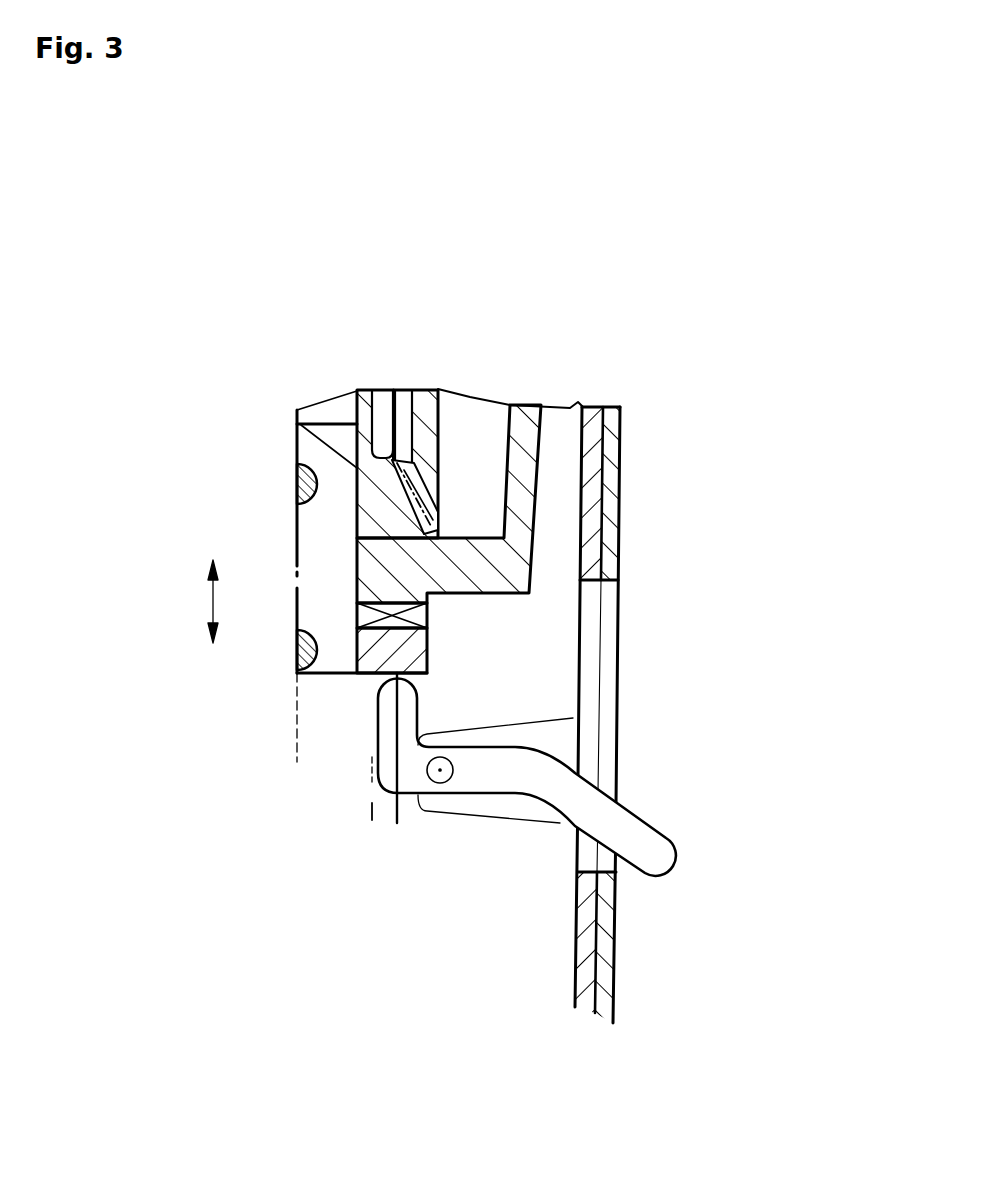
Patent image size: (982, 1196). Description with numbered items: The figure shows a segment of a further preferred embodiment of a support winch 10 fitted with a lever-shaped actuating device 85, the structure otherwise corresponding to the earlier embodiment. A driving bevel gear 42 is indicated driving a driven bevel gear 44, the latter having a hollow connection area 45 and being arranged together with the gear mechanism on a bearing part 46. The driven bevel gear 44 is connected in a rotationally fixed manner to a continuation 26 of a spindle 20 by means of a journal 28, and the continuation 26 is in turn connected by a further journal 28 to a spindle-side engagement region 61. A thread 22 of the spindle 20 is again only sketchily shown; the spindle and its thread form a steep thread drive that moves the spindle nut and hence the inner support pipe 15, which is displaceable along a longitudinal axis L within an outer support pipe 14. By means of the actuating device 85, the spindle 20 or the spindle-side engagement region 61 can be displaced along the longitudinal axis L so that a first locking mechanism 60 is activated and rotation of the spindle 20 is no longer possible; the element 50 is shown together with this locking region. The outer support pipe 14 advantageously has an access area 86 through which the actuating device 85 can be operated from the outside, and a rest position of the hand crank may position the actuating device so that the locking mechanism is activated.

The support winch 10 is at (640, 308).
The outer support pipe 14 is at (622, 513).
The inner support pipe 15 is at (622, 422).
The spindle 20 is at (333, 713).
The thread 22 is at (362, 817).
The continuation 26 is at (313, 563).
The journal 28 is at (297, 472).
The driving bevel gear 42 is at (428, 390).
The driven bevel gear 44 is at (297, 408).
The connection area 45 is at (357, 392).
The bearing part 46 is at (525, 568).
The locking element 50 is at (472, 632).
The first locking mechanism 60 is at (598, 672).
The spindle-side engagement region 61 is at (405, 658).
The actuating device 85 is at (630, 830).
The access area 86 is at (660, 774).
The longitudinal axis L is at (213, 597).